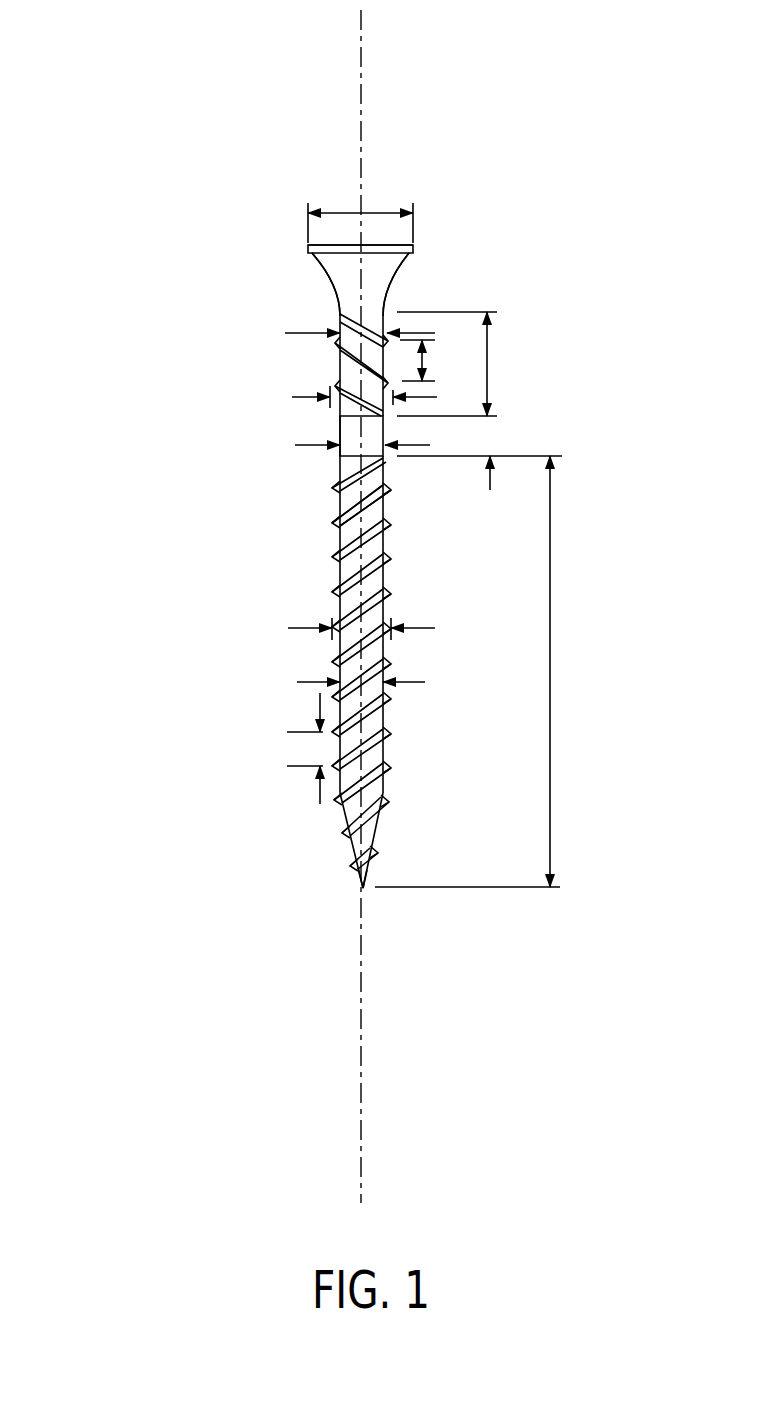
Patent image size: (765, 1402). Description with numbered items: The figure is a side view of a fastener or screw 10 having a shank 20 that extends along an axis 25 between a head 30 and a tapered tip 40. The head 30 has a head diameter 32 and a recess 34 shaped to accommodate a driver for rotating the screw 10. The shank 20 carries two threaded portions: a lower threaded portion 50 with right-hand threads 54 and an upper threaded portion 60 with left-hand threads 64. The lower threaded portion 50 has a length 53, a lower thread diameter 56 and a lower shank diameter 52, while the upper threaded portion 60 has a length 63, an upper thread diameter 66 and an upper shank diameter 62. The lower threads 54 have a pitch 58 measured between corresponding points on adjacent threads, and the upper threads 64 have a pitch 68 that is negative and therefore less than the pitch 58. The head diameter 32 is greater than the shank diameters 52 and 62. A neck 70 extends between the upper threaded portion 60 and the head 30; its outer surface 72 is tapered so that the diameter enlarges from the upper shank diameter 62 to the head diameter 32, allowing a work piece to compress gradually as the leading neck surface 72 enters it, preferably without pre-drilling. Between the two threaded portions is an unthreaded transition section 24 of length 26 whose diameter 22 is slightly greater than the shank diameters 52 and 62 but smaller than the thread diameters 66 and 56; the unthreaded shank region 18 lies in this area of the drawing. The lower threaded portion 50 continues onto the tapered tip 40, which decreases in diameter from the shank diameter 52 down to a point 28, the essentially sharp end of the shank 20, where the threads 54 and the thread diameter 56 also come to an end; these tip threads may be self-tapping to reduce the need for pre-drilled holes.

The fastener or screw 10 is at (136, 403).
The unthreaded shank section 18 is at (345, 408).
The shank 20 is at (349, 575).
The transition section diameter 22 is at (307, 449).
The transition section 24 is at (345, 426).
The axis 25 is at (361, 1143).
The transition section length 26 is at (490, 487).
The point 28 is at (364, 889).
The head 30 is at (413, 249).
The head diameter 32 is at (374, 212).
The recess 34 is at (347, 246).
The tapered tip 40 is at (368, 837).
The lower threaded portion 50 is at (377, 750).
The lower shank diameter 52 is at (413, 683).
The lower threaded portion length 53 is at (552, 614).
The right-hand threads 54 is at (393, 528).
The lower thread diameter 56 is at (420, 628).
The lower thread pitch 58 is at (320, 796).
The upper threaded portion 60 is at (352, 382).
The upper shank diameter 62 is at (293, 333).
The upper threaded portion length 63 is at (490, 366).
The left-hand threads 64 is at (342, 345).
The upper thread diameter 66 is at (292, 397).
The upper thread pitch 68 is at (424, 365).
The neck 70 is at (330, 268).
The neck outer surface 72 is at (356, 302).